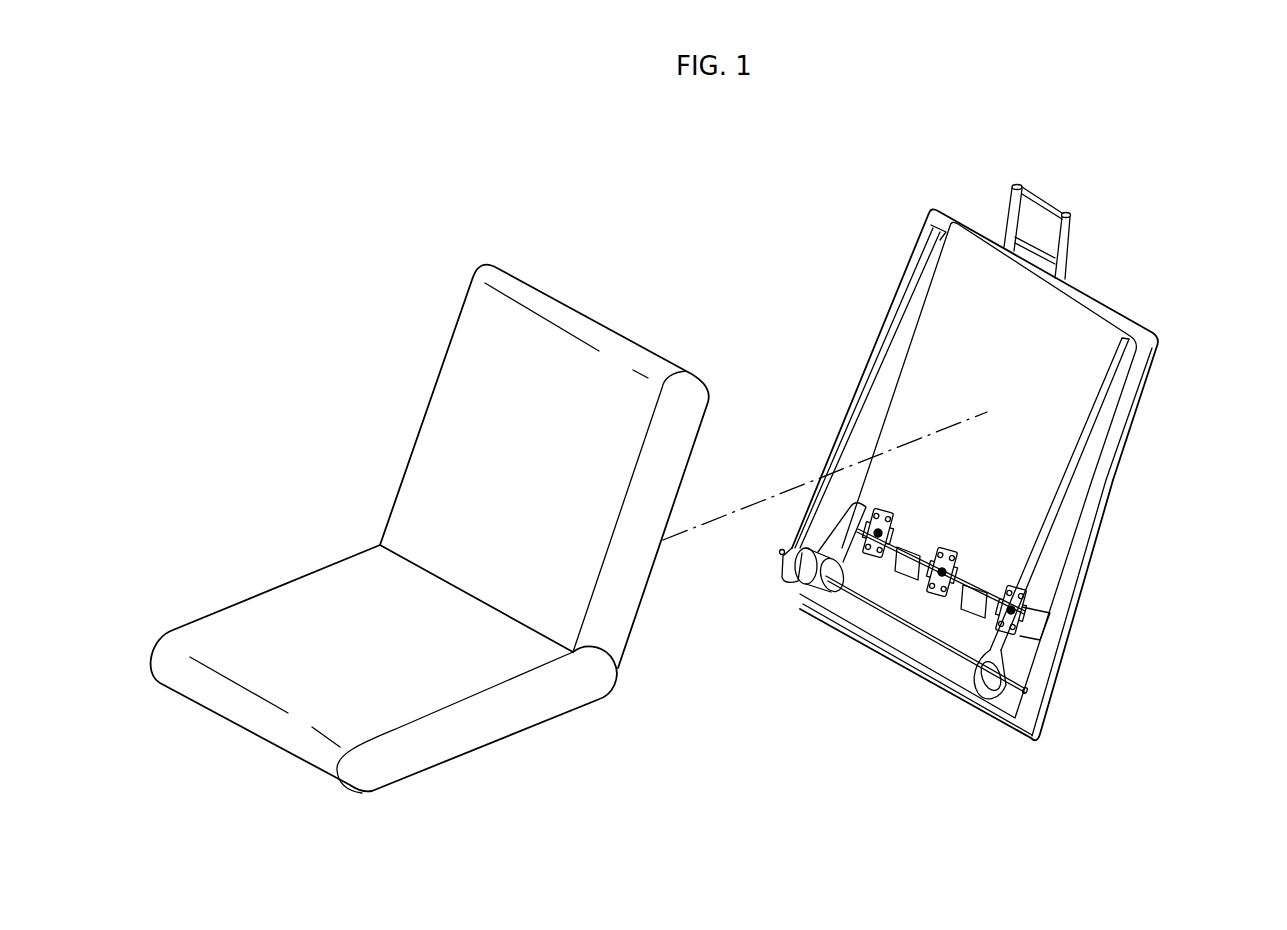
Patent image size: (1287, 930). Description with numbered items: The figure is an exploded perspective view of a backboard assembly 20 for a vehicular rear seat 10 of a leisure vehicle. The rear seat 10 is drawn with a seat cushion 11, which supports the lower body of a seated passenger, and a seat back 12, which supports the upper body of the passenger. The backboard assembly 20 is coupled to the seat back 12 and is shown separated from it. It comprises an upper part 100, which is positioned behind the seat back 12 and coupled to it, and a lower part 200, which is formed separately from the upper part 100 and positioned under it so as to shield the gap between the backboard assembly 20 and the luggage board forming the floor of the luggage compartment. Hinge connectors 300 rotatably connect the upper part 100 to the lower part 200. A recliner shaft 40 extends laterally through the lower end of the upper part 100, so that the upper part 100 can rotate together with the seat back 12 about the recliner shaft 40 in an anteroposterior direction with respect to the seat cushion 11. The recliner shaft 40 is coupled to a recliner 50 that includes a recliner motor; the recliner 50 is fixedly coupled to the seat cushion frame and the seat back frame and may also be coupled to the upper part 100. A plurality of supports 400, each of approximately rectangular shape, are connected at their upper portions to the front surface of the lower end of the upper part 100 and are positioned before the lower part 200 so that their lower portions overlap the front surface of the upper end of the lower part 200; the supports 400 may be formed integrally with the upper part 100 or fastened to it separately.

The rear seat 10 is at (430, 487).
The seat cushion 11 is at (258, 607).
The seat back 12 is at (452, 398).
The backboard assembly 20 is at (1142, 428).
The recliner shaft 40 is at (948, 650).
The recliner 50 is at (850, 522).
The upper part 100 is at (937, 323).
The lower part 200 is at (858, 568).
The hinge connectors 300 is at (868, 558).
The supports 400 is at (907, 547).